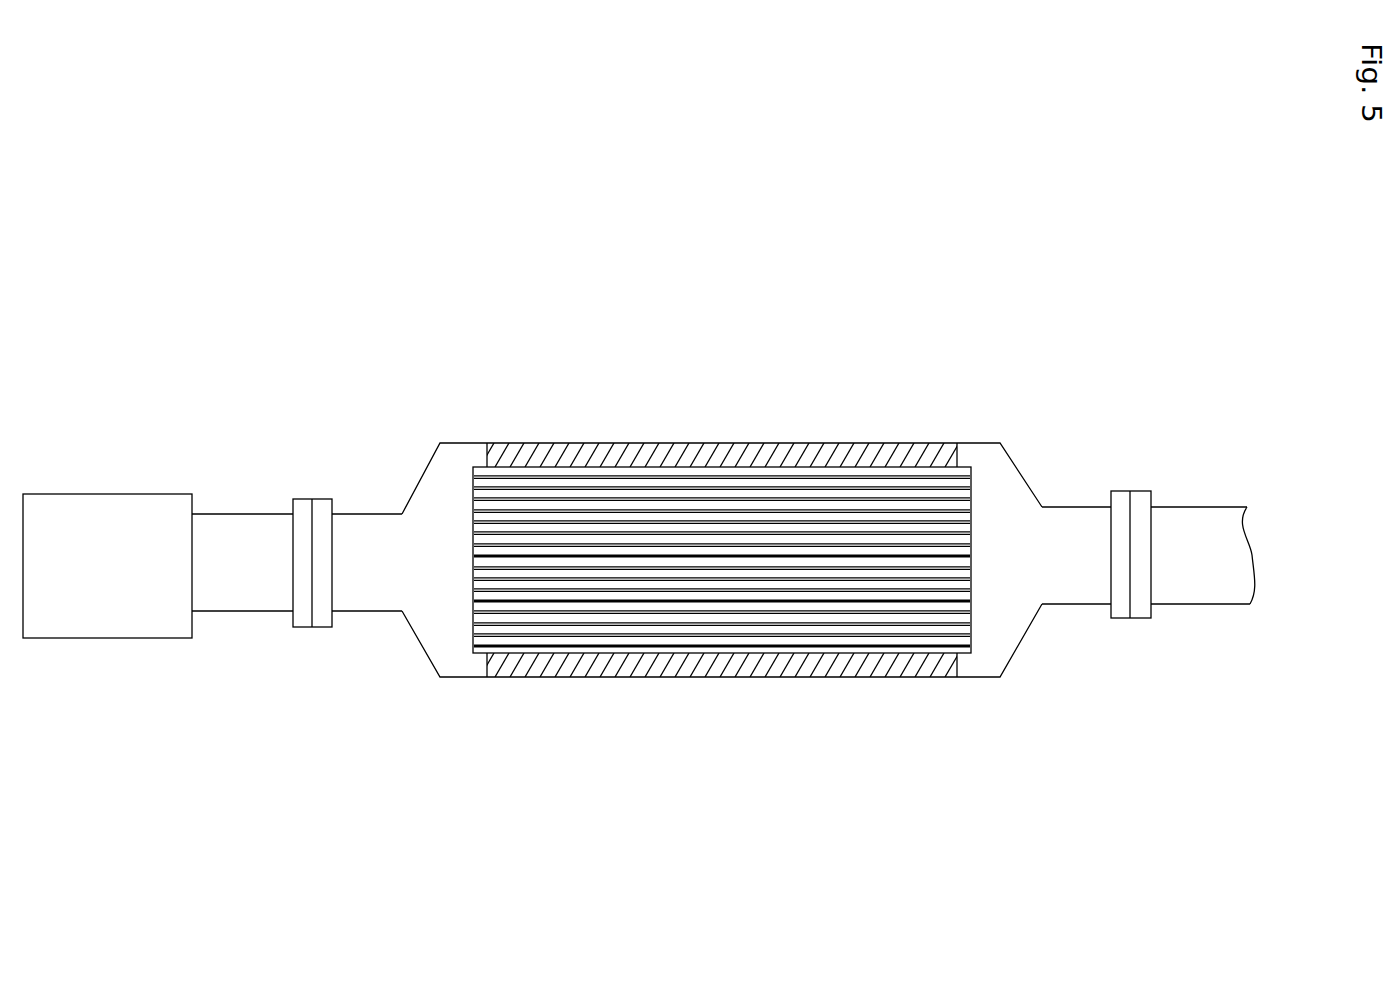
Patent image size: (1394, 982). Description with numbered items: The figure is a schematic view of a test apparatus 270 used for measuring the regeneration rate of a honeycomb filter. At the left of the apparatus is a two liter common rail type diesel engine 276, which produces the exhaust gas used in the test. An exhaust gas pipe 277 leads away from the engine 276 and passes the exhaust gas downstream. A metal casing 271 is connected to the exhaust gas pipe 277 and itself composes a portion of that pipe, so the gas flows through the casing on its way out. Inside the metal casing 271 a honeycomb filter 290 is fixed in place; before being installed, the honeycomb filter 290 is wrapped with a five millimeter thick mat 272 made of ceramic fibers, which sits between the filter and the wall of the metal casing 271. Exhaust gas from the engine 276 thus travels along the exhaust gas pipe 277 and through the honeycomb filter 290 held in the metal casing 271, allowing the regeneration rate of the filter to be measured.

The test apparatus 270 is at (707, 338).
The metal casing 271 is at (979, 677).
The mat 272 is at (582, 457).
The common rail type diesel engine 276 is at (107, 511).
The exhaust gas pipe 277 is at (237, 533).
The honeycomb filter 290 is at (988, 479).